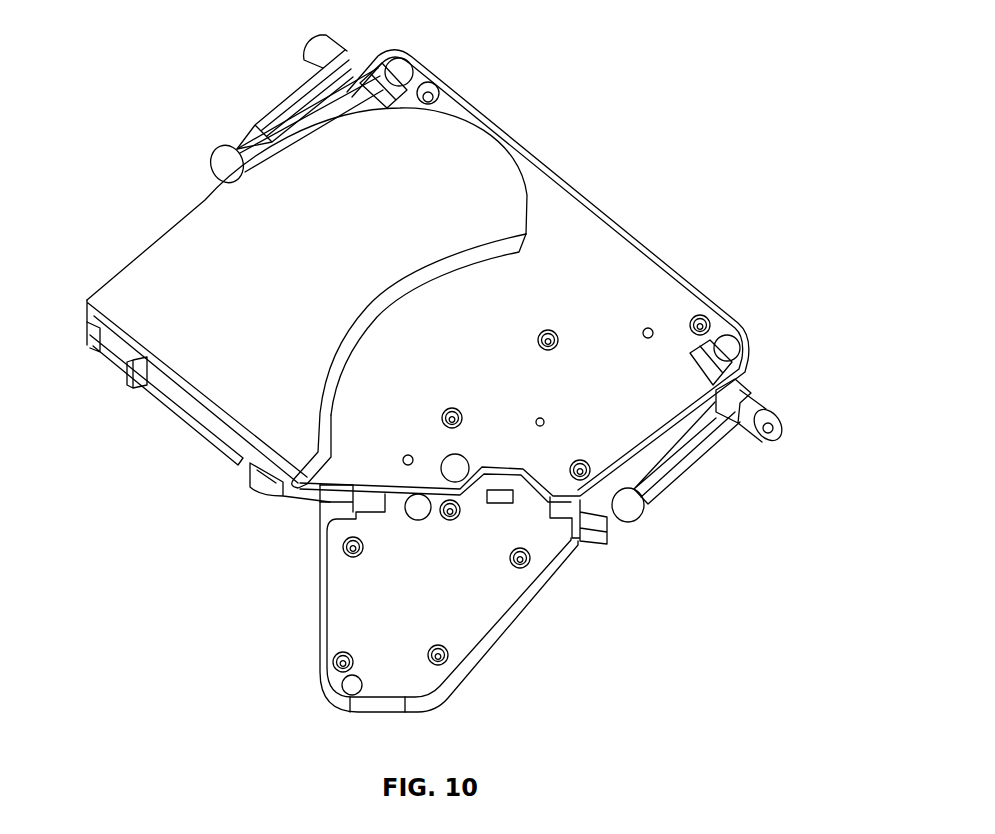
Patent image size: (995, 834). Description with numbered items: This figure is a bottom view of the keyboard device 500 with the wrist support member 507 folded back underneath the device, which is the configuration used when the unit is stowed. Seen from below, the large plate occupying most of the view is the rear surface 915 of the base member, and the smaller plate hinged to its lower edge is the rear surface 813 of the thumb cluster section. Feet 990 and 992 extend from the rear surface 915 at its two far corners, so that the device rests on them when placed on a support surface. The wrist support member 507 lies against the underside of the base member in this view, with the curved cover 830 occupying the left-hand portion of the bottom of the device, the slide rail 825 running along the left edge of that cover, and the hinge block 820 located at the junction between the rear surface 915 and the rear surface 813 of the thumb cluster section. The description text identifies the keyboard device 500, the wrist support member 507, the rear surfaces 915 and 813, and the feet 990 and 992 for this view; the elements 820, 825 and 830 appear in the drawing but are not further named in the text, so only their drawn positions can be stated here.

The keyboard device 500 is at (600, 95).
The wrist support member 507 is at (298, 605).
The rear surface of thumb cluster section 813 is at (500, 588).
The hinge block 820 is at (607, 535).
The slide rail 825 is at (168, 400).
The curved cover 830 is at (128, 288).
The rear surface of base member 915 is at (580, 257).
The foot 990 is at (397, 65).
The foot 992 is at (723, 345).